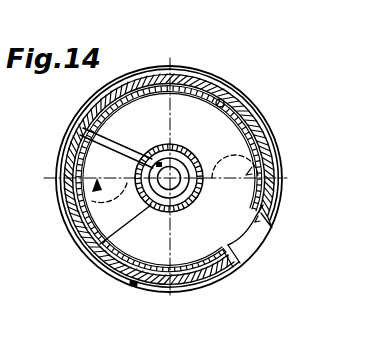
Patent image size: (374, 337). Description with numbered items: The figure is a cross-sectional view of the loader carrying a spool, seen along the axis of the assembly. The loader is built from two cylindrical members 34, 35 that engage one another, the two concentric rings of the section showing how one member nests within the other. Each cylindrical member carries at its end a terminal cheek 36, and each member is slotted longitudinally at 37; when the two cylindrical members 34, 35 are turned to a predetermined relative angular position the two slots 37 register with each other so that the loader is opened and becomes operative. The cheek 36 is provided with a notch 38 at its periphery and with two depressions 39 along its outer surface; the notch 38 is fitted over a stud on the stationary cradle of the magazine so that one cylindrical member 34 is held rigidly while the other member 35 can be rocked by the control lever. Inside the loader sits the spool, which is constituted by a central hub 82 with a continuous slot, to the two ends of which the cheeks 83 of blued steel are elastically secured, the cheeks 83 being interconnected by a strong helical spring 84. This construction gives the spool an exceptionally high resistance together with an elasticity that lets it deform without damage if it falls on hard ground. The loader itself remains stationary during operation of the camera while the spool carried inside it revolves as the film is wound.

The cylindrical member 34 is at (235, 95).
The cylindrical member 35 is at (255, 123).
The terminal cheek 36 is at (272, 147).
The longitudinal slot 37 is at (262, 241).
The notch 38 is at (133, 284).
The depression 39 is at (277, 163).
The hub 82 is at (100, 244).
The cheek 83 is at (243, 257).
The helical spring 84 is at (83, 128).